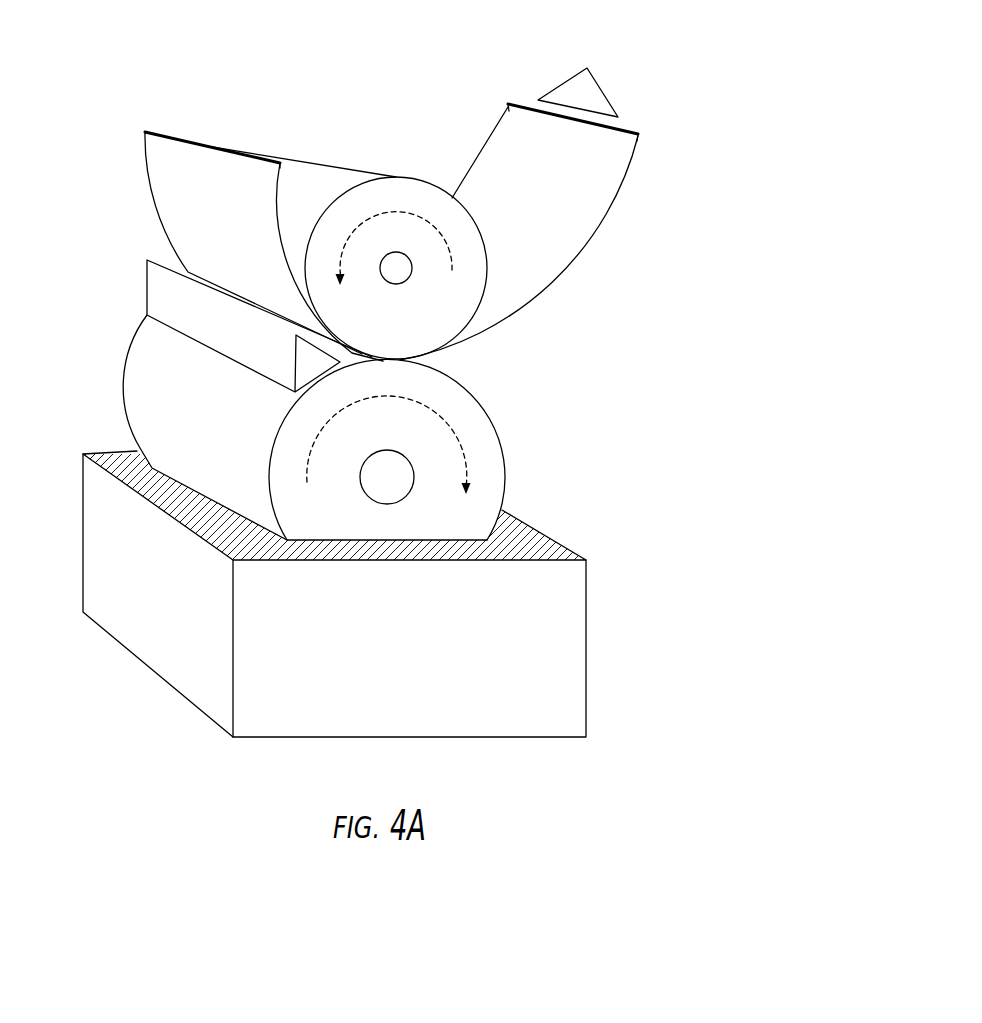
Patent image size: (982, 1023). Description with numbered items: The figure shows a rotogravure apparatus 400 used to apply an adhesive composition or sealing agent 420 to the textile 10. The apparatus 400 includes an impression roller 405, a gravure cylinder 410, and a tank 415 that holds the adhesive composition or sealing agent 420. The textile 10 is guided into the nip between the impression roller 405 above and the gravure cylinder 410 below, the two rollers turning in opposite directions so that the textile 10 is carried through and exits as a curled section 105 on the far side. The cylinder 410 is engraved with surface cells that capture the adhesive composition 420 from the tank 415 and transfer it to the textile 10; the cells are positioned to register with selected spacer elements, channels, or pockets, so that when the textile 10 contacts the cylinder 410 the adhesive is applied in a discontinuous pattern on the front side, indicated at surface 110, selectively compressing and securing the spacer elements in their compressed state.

The rotogravure apparatus 400 is at (549, 46).
The textile 10 is at (160, 152).
The first surface of sheet 110 is at (197, 160).
The laminated strip section 105 is at (622, 163).
The impression roller 405 is at (465, 260).
The gravure cylinder 410 is at (463, 405).
The tank 415 is at (562, 604).
The adhesive composition or sealing agent 420 is at (522, 537).